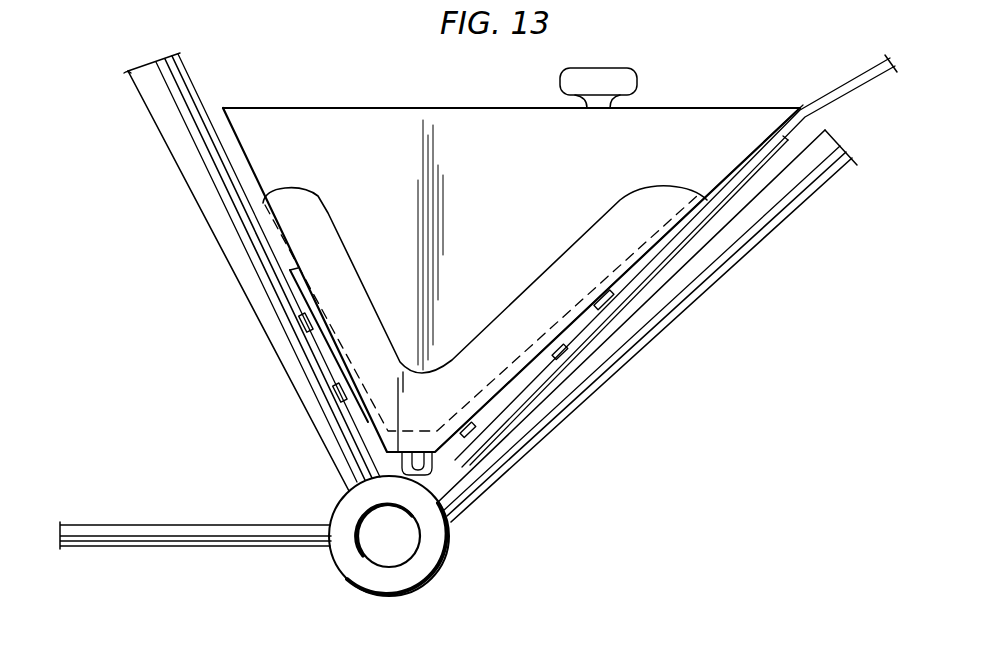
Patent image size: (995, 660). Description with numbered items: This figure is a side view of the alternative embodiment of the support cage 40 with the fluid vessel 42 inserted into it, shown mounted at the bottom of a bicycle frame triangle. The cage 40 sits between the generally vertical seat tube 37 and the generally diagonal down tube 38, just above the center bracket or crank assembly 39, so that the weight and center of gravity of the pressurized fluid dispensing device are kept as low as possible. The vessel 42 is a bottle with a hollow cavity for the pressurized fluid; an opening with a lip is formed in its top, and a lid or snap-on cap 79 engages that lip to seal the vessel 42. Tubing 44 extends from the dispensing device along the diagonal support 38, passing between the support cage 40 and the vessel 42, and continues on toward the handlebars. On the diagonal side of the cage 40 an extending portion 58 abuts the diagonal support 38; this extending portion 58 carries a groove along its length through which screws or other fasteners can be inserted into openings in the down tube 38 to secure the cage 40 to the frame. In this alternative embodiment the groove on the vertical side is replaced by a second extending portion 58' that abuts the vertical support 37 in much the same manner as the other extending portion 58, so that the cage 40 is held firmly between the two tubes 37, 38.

The vertical support or seat tube 37 is at (213, 236).
The diagonal support or down tube 38 is at (778, 220).
The center bracket or crank assembly 39 is at (455, 546).
The support cage or housing 40 is at (636, 228).
The fluid vessel or bottle 42 is at (403, 117).
The tubing 44 is at (845, 95).
The extending portion 58 is at (548, 364).
The extending portion 58' is at (286, 345).
The lid or snap on cap 79 is at (638, 78).